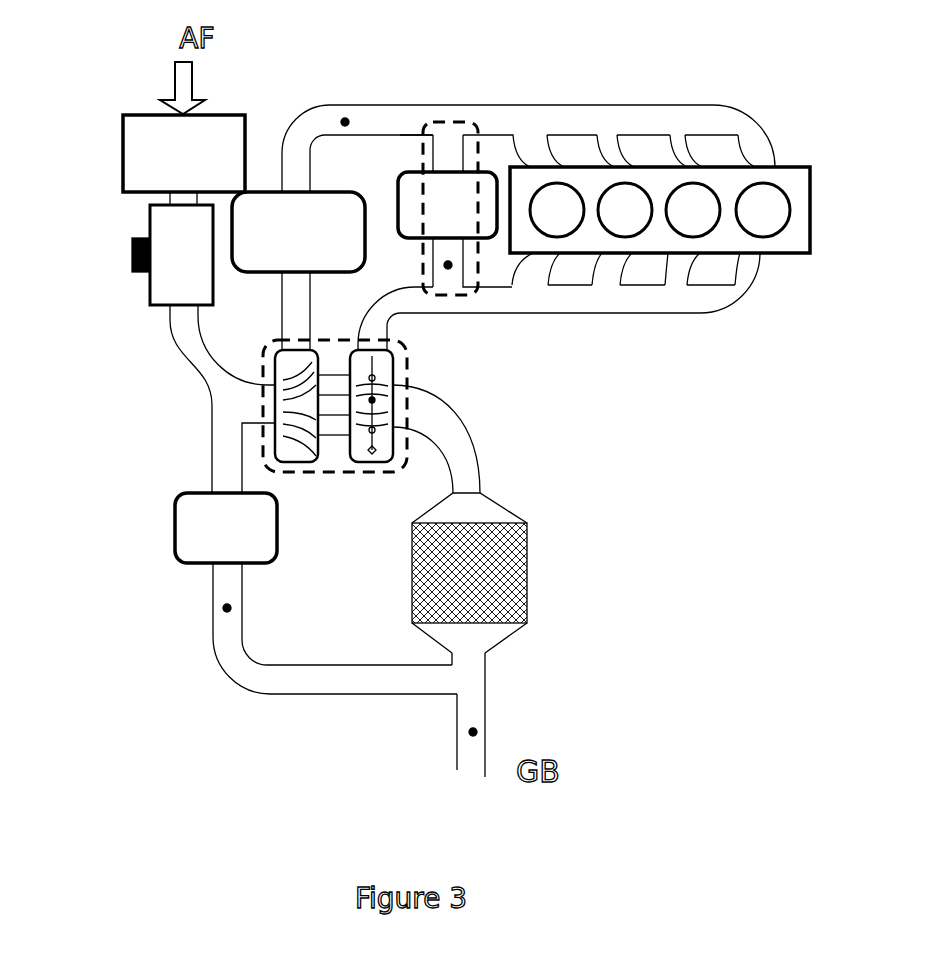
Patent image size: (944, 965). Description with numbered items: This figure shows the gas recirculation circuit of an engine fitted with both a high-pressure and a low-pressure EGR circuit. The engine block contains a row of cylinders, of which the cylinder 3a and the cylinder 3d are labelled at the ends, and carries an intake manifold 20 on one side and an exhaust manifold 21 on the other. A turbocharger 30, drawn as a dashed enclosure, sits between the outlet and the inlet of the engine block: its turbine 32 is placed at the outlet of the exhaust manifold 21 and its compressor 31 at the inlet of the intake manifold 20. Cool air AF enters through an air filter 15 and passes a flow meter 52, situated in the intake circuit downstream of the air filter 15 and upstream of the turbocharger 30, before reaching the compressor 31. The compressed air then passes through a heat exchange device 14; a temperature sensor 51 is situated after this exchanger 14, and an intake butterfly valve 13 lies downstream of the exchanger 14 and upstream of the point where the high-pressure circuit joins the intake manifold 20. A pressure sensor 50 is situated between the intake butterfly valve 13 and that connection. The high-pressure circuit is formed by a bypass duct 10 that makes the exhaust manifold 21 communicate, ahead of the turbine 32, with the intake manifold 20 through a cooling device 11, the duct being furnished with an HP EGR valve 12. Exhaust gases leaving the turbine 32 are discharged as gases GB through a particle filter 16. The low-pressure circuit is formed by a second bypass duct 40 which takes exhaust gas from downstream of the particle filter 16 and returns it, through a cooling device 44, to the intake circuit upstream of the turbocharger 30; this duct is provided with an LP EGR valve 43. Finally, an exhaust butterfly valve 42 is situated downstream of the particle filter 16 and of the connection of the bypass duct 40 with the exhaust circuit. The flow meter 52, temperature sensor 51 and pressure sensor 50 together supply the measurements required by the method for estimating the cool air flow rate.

The air filter 15 is at (146, 157).
The flow meter 52 is at (180, 238).
The heat exchange device 14 is at (273, 212).
The intake butterfly valve 13 is at (345, 122).
The pressure sensor 50 is at (393, 113).
The temperature sensor 51 is at (423, 117).
The bypass duct 10 is at (460, 120).
The cooling device 11 is at (487, 205).
The HP EGR valve 12 is at (448, 267).
The intake manifold 20 is at (598, 120).
The exhaust manifold 21 is at (618, 293).
The cylinder 3a is at (560, 207).
The cylinder 3d is at (758, 207).
The turbocharger 30 is at (335, 488).
The compressor 31 is at (295, 463).
The turbine 32 is at (368, 463).
The particle filter 16 is at (473, 567).
The bypass duct 40 is at (267, 677).
The cooling device 44 is at (210, 535).
The LP EGR valve 43 is at (227, 608).
The exhaust butterfly valve 42 is at (473, 732).